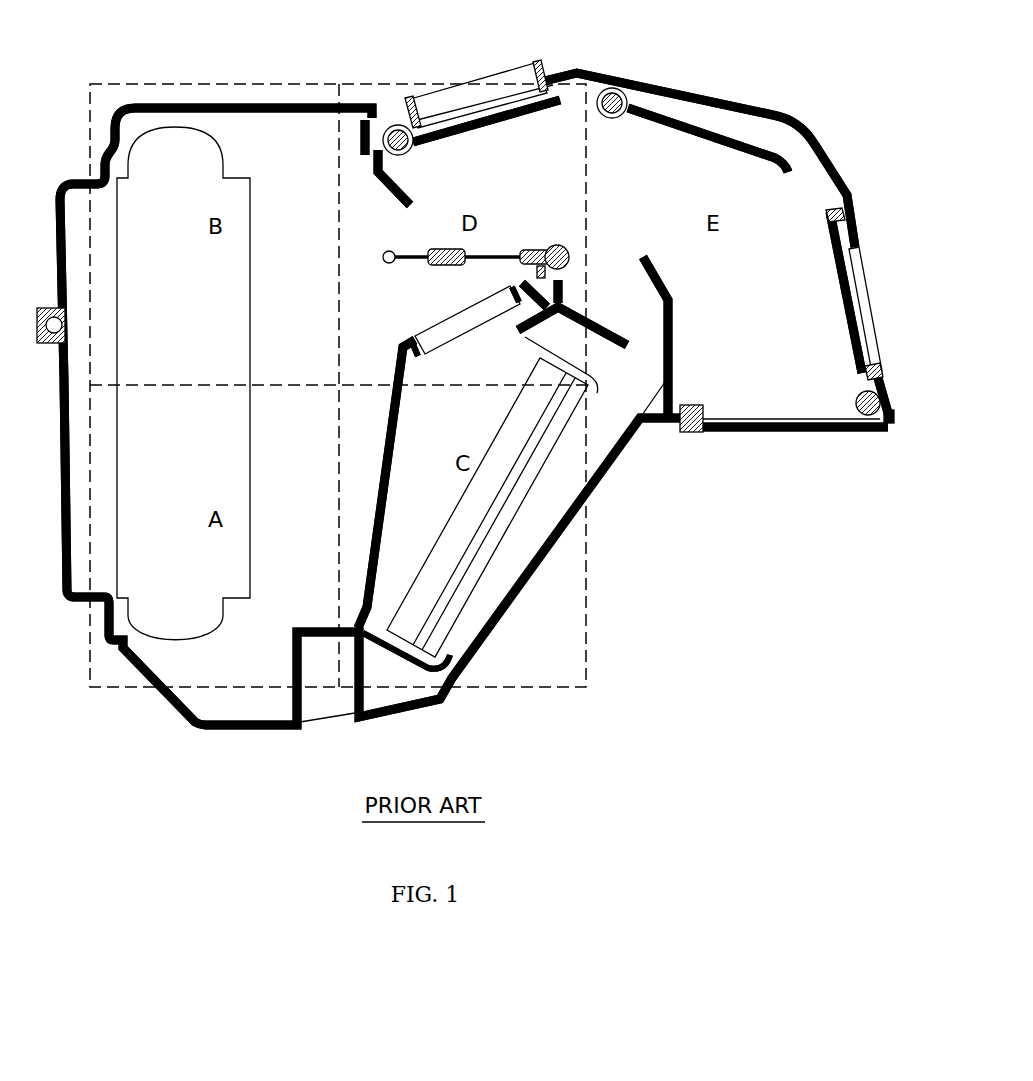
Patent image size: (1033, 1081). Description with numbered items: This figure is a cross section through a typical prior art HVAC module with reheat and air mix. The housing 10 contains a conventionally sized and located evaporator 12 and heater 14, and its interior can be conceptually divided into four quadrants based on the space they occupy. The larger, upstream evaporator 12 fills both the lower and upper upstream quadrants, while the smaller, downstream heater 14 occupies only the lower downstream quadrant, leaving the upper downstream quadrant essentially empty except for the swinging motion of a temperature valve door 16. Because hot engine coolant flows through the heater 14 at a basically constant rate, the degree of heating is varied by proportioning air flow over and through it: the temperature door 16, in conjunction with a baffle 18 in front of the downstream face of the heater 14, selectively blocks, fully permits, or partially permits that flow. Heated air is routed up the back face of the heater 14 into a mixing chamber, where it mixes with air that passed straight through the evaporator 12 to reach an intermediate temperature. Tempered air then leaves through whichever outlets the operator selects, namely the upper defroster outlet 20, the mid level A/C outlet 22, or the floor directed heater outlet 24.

The housing 10 is at (328, 95).
The evaporator 12 is at (176, 127).
The heater 14 is at (457, 600).
The temperature valve door 16 is at (487, 255).
The baffle 18 is at (380, 487).
The upper defroster outlet 20 is at (485, 120).
The mid level A/C outlet 22 is at (868, 305).
The floor directed heater outlet 24 is at (708, 414).